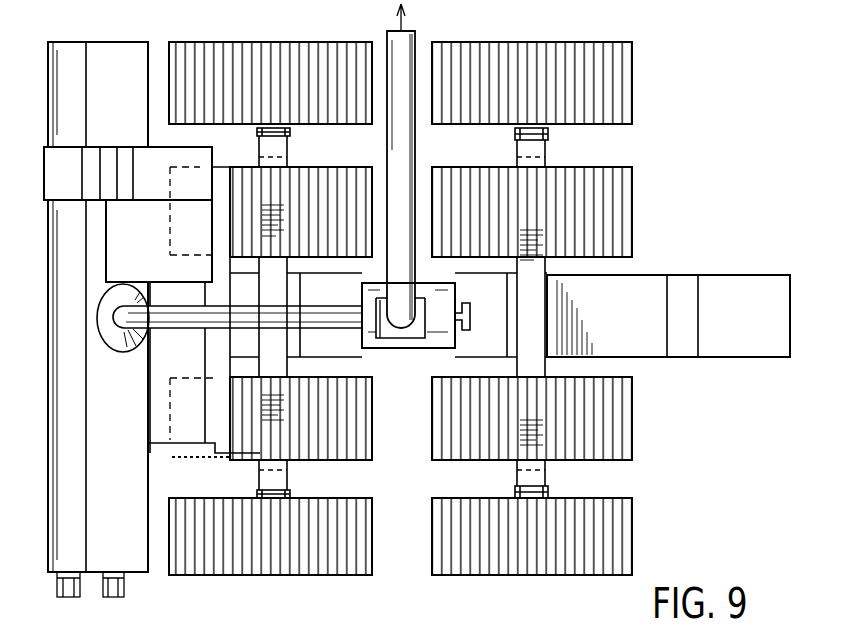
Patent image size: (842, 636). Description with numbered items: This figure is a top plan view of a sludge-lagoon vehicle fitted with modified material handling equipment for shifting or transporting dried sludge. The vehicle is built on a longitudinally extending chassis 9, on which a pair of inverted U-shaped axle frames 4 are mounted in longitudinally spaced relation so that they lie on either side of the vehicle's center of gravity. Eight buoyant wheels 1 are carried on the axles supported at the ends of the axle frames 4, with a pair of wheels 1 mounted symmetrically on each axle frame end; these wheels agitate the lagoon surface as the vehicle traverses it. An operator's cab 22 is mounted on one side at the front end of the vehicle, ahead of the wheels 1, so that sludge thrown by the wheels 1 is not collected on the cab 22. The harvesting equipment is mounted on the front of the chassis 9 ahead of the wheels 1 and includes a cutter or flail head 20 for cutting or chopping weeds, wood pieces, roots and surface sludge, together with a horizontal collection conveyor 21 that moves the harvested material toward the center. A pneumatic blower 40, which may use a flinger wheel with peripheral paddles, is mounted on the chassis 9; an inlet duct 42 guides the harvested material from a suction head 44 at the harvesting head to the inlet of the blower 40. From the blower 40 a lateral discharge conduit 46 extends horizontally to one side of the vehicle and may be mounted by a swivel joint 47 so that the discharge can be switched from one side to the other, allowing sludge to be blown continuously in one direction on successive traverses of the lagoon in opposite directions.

The buoyant wheels 1 is at (626, 113).
The axle frames 4 is at (288, 146).
The chassis 9 is at (650, 275).
The cutter or flail head 20 is at (78, 473).
The horizontal collection conveyor 21 is at (129, 497).
The operator's cab 22 is at (148, 253).
The pneumatic blower 40 is at (437, 340).
The inlet duct 42 is at (180, 326).
The suction head 44 is at (117, 343).
The lateral discharge conduit 46 is at (413, 155).
The swivel joint 47 is at (383, 330).